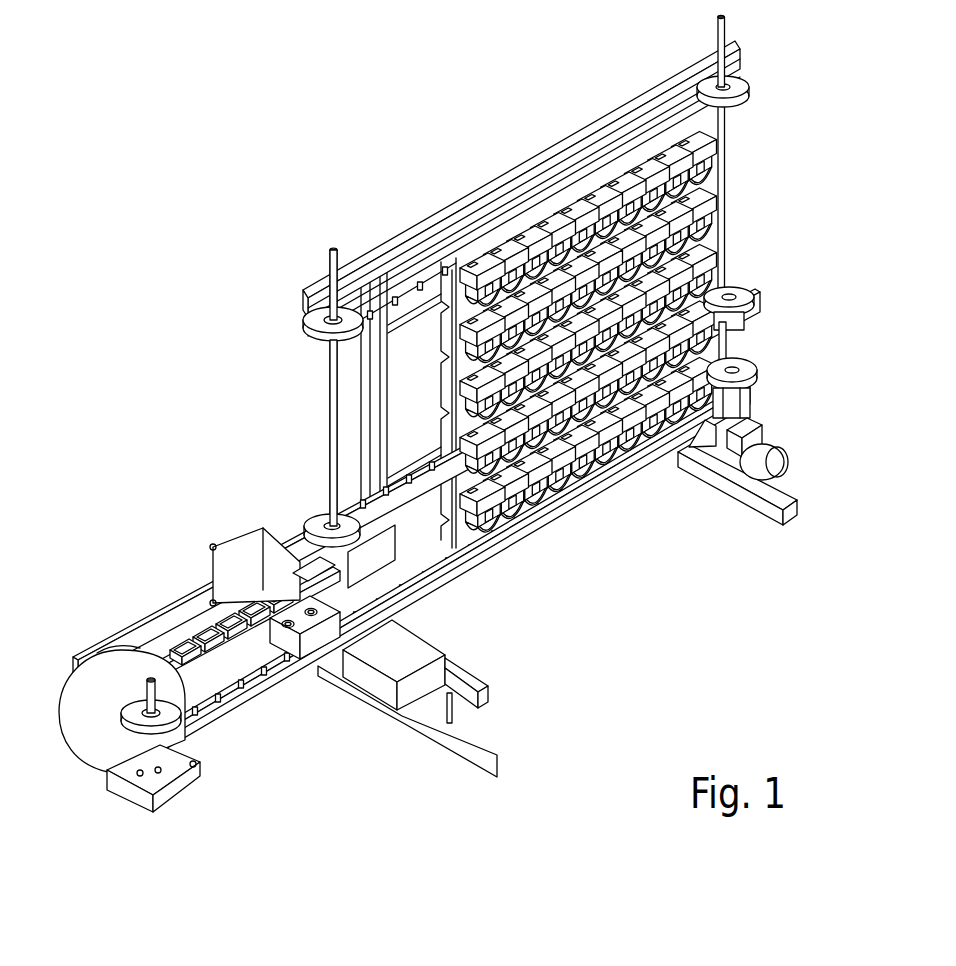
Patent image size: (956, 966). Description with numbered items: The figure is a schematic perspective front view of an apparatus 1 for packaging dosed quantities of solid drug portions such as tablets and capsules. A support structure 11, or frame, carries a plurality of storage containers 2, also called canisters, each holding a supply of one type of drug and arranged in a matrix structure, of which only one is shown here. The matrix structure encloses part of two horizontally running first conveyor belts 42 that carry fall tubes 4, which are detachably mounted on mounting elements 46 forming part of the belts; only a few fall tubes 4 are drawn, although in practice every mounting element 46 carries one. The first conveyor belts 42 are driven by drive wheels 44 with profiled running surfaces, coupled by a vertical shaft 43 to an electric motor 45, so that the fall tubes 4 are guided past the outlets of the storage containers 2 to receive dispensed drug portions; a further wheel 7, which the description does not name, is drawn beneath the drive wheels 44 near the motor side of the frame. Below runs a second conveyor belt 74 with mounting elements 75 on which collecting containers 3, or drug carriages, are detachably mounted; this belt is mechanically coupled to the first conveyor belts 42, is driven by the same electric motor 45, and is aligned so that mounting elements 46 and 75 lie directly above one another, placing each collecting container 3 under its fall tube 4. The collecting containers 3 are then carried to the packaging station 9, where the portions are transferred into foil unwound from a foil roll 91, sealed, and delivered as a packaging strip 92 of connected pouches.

The apparatus 1 is at (240, 207).
The storage container 2 is at (550, 230).
The collecting container 3 is at (210, 630).
The fall tube 4 is at (443, 427).
The drive sprocket 7 is at (760, 353).
The packaging station 9 is at (200, 534).
The support structure 11 is at (370, 393).
The first conveyor belt 42 is at (307, 338).
The vertical shaft 43 is at (725, 252).
The drive wheel 44 is at (740, 82).
The electric motor 45 is at (770, 446).
The mounting element 46 is at (425, 290).
The second conveyor belt 74 is at (226, 722).
The mounting element 75 is at (282, 683).
The foil roll 91 is at (92, 730).
The packaging strip 92 is at (467, 747).